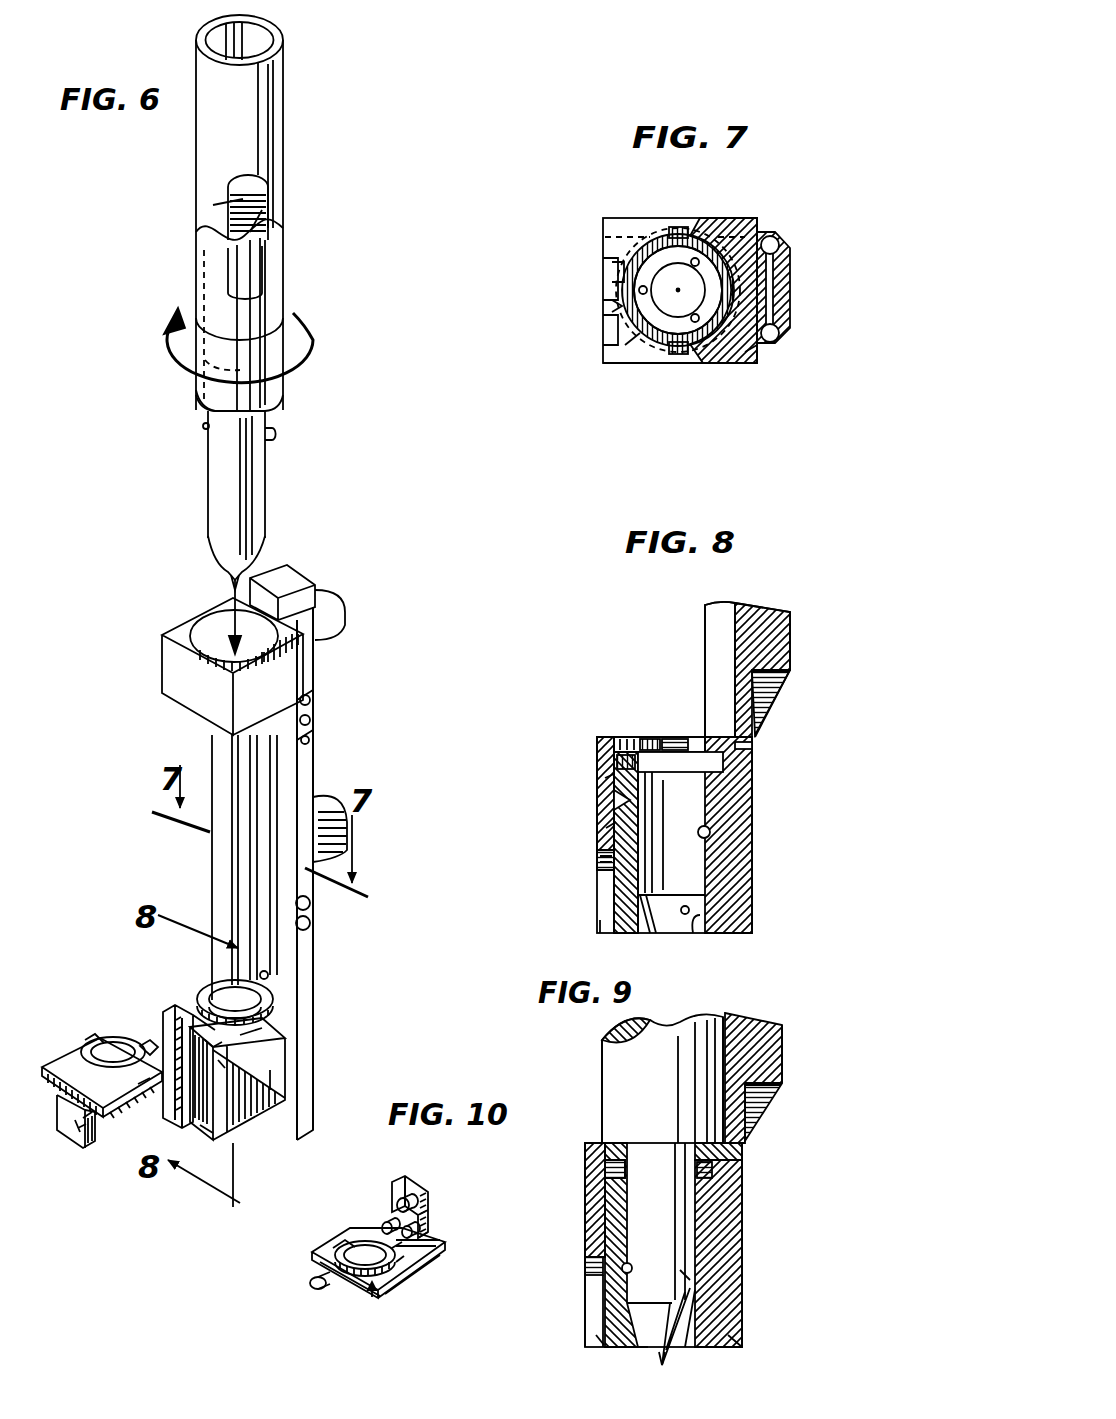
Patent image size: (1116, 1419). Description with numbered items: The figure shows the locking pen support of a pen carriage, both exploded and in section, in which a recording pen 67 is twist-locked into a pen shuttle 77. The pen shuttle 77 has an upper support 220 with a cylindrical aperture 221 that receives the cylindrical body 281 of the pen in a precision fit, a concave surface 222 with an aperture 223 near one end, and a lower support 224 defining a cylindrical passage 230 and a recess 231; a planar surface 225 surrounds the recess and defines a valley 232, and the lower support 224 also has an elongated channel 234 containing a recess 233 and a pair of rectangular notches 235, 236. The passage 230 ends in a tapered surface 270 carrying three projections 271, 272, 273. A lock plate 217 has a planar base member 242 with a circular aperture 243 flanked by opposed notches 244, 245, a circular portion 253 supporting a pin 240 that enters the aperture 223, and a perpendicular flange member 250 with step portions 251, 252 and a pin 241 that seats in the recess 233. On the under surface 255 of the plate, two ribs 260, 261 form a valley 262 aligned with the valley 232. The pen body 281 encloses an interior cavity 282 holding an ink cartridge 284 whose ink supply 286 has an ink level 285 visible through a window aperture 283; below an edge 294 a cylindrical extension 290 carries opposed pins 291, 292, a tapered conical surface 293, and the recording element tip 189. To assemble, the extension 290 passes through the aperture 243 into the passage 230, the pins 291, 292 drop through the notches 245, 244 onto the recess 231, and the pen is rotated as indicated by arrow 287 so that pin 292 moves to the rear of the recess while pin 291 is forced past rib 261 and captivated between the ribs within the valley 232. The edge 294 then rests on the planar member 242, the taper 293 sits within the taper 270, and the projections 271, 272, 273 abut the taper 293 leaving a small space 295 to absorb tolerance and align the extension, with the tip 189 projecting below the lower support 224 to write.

In FIG. 6, the recording pen 67 is at (292, 178).
In FIG. 9, the recording pen 67 is at (706, 1012).
In FIG. 6, the pen shuttle 77 is at (330, 740).
In FIG. 8, the pen shuttle 77 is at (756, 612).
In FIG. 9, the pen shuttle 77 is at (784, 1084).
In FIG. 6, the recording element tip 189 is at (229, 580).
In FIG. 9, the recording element tip 189 is at (664, 1360).
In FIG. 10, the lock plate 217 is at (372, 1300).
In FIG. 7, the lock plate 217 is at (600, 233).
In FIG. 8, the lock plate 217 is at (594, 740).
In FIG. 9, the lock plate 217 is at (583, 1170).
In FIG. 6, the upper support 220 is at (282, 664).
In FIG. 7, the upper support 220 is at (702, 230).
In FIG. 6, the cylindrical aperture 221 is at (212, 622).
In FIG. 7, the cylindrical aperture 221 is at (702, 270).
In FIG. 6, the concave surface 222 is at (262, 775).
In FIG. 7, the concave surface 222 is at (762, 300).
In FIG. 8, the concave surface 222 is at (718, 640).
In FIG. 9, the concave surface 222 is at (760, 1065).
In FIG. 6, the aperture 223 is at (268, 975).
In FIG. 6, the lower support 224 is at (275, 1072).
In FIG. 7, the lower support 224 is at (625, 364).
In FIG. 8, the lower support 224 is at (735, 878).
In FIG. 9, the lower support 224 is at (725, 1228).
In FIG. 6, the planar surface 225 is at (250, 1040).
In FIG. 6, the cylindrical passage 230 is at (255, 994).
In FIG. 7, the cylindrical passage 230 is at (776, 254).
In FIG. 8, the cylindrical passage 230 is at (710, 832).
In FIG. 9, the cylindrical passage 230 is at (627, 1270).
In FIG. 6, the recess 231 is at (262, 1008).
In FIG. 7, the recess 231 is at (636, 316).
In FIG. 8, the recess 231 is at (722, 762).
In FIG. 6, the valley 232 is at (274, 1080).
In FIG. 8, the valley 232 is at (612, 775).
In FIG. 6, the recess 233 is at (222, 1072).
In FIG. 8, the recess 233 is at (742, 742).
In FIG. 6, the elongated channel 234 is at (225, 1142).
In FIG. 8, the elongated channel 234 is at (604, 918).
In FIG. 6, the rectangular notch 235 is at (172, 1010).
In FIG. 6, the rectangular notch 236 is at (218, 1048).
In FIG. 6, the cylindrical pin 240 is at (152, 1044).
In FIG. 10, the cylindrical pin 240 is at (312, 1288).
In FIG. 8, the cylindrical pin 240 is at (750, 750).
In FIG. 6, the cylindrical pin 241 is at (79, 1150).
In FIG. 10, the cylindrical pin 241 is at (405, 1178).
In FIG. 8, the cylindrical pin 241 is at (624, 798).
In FIG. 6, the planar base member 242 is at (84, 1042).
In FIG. 10, the planar base member 242 is at (388, 1292).
In FIG. 7, the planar base member 242 is at (626, 230).
In FIG. 8, the planar base member 242 is at (622, 737).
In FIG. 6, the circular aperture 243 is at (84, 1050).
In FIG. 10, the circular aperture 243 is at (342, 1268).
In FIG. 7, the circular aperture 243 is at (636, 294).
In FIG. 8, the circular aperture 243 is at (680, 737).
In FIG. 6, the notch 244 is at (102, 1040).
In FIG. 10, the notch 244 is at (345, 1245).
In FIG. 7, the notch 244 is at (680, 227).
In FIG. 8, the notch 244 is at (650, 737).
In FIG. 6, the notch 245 is at (148, 1096).
In FIG. 10, the notch 245 is at (400, 1262).
In FIG. 7, the notch 245 is at (680, 355).
In FIG. 6, the flange member 250 is at (62, 1136).
In FIG. 10, the flange member 250 is at (398, 1198).
In FIG. 8, the flange member 250 is at (612, 825).
In FIG. 6, the step portion 251 is at (95, 1130).
In FIG. 10, the step portion 251 is at (427, 1195).
In FIG. 6, the step portion 252 is at (60, 1100).
In FIG. 10, the step portion 252 is at (384, 1224).
In FIG. 6, the circular portion 253 is at (110, 1036).
In FIG. 10, the circular portion 253 is at (368, 1300).
In FIG. 10, the under surface 255 is at (396, 1250).
In FIG. 10, the rib 260 is at (402, 1230).
In FIG. 7, the rib 260 is at (620, 272).
In FIG. 8, the rib 260 is at (617, 762).
In FIG. 10, the rib 261 is at (428, 1225).
In FIG. 7, the rib 261 is at (623, 314).
In FIG. 10, the valley 262 is at (428, 1246).
In FIG. 8, the tapered surface 270 is at (696, 933).
In FIG. 9, the tapered surface 270 is at (690, 1279).
In FIG. 8, the projection 271 is at (689, 910).
In FIG. 9, the projection 271 is at (738, 1338).
In FIG. 7, the projection 272 is at (636, 340).
In FIG. 8, the projection 272 is at (646, 933).
In FIG. 9, the projection 272 is at (604, 1340).
In FIG. 7, the projection 273 is at (760, 350).
In FIG. 6, the cylindrical body 281 is at (270, 118).
In FIG. 9, the cylindrical body 281 is at (724, 1050).
In FIG. 6, the interior cavity 282 is at (236, 22).
In FIG. 6, the window aperture 283 is at (250, 222).
In FIG. 6, the ink cartridge 284 is at (226, 193).
In FIG. 6, the ink level 285 is at (238, 201).
In FIG. 6, the ink supply 286 is at (268, 198).
In FIG. 6, the arrow 287 is at (318, 336).
In FIG. 6, the cylindrical extension 290 is at (258, 480).
In FIG. 9, the cylindrical extension 290 is at (680, 1216).
In FIG. 6, the pin 291 is at (274, 435).
In FIG. 9, the pin 291 is at (606, 1160).
In FIG. 6, the pin 292 is at (206, 430).
In FIG. 9, the pin 292 is at (713, 1168).
In FIG. 6, the tapered conical surface 293 is at (255, 546).
In FIG. 9, the tapered conical surface 293 is at (688, 1316).
In FIG. 6, the edge 294 is at (202, 404).
In FIG. 9, the edge 294 is at (736, 1150).
In FIG. 9, the space 295 is at (636, 1347).